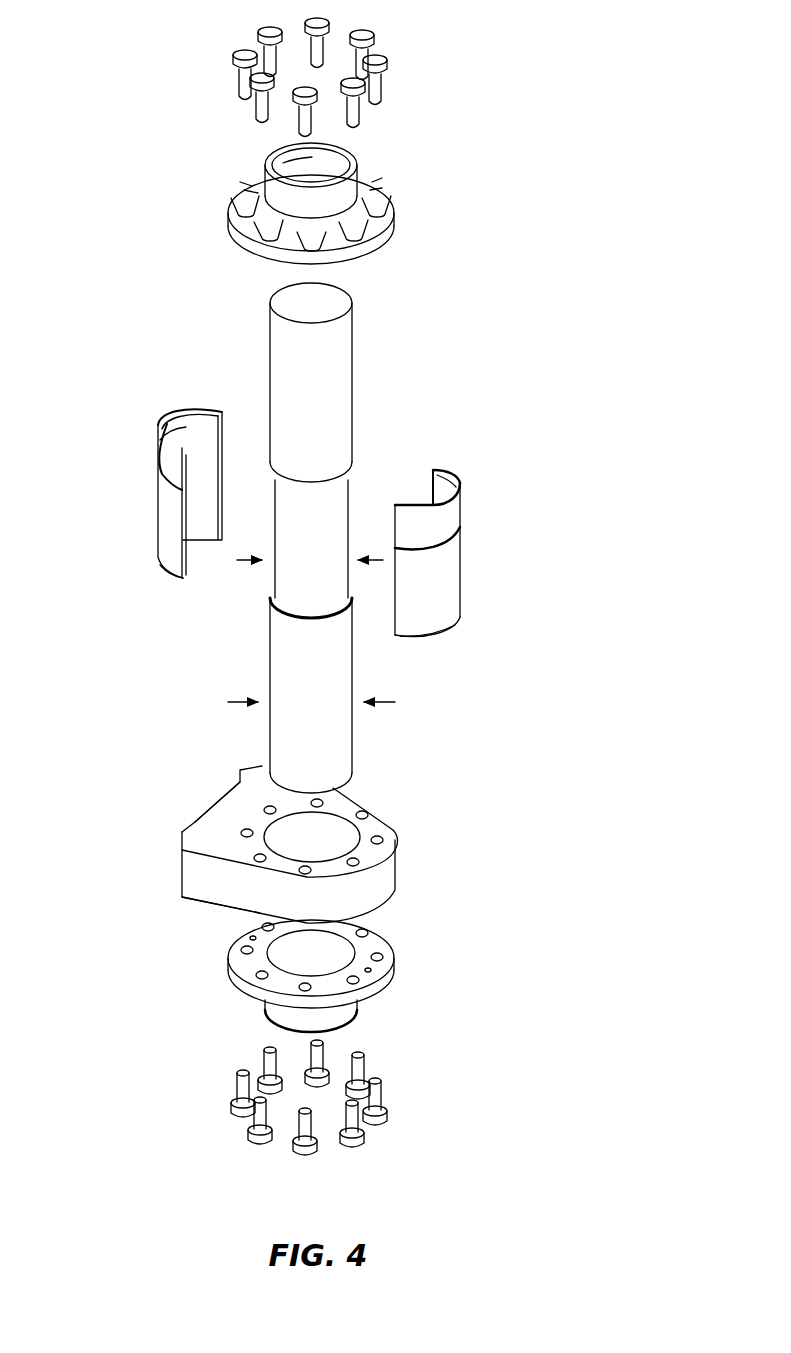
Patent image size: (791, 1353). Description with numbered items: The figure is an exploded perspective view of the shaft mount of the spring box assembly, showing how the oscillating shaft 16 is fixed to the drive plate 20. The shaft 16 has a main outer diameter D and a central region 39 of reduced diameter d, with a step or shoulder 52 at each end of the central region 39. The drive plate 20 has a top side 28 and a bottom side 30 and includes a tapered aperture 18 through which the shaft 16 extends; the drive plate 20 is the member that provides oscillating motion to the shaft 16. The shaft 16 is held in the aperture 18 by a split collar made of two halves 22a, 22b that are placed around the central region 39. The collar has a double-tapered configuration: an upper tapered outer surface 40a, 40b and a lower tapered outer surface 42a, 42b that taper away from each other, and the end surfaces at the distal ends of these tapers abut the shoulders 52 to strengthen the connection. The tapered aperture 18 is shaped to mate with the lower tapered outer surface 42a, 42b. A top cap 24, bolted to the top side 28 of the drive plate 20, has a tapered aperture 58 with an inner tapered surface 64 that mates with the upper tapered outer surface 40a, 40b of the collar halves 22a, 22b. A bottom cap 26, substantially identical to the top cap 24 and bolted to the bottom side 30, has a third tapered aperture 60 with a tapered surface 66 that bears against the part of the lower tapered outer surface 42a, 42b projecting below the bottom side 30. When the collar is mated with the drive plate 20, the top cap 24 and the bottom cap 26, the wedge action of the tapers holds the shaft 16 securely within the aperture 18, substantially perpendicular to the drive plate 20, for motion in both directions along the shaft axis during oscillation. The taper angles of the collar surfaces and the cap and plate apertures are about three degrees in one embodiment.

The shaft 16 is at (310, 538).
The tapered aperture 18 is at (360, 833).
The drive plate 20 is at (276, 856).
The split collar half 22a is at (125, 501).
The split collar half 22b is at (485, 548).
The top cap 24 is at (313, 185).
The bottom cap 26 is at (318, 978).
The top side 28 is at (217, 826).
The bottom side 30 is at (214, 909).
The central region 39 is at (335, 517).
The upper tapered outer surface 40a is at (168, 455).
The upper tapered outer surface 40b is at (448, 518).
The lower tapered outer surface 42a is at (165, 549).
The lower tapered outer surface 42b is at (442, 602).
The shoulder 52 is at (270, 464).
The tapered aperture 58 is at (350, 160).
The tapered aperture 60 is at (355, 950).
The inner tapered surface 64 is at (292, 167).
The tapered surface 66 is at (296, 959).
The reduced diameter d is at (300, 560).
The main outer diameter D is at (322, 702).